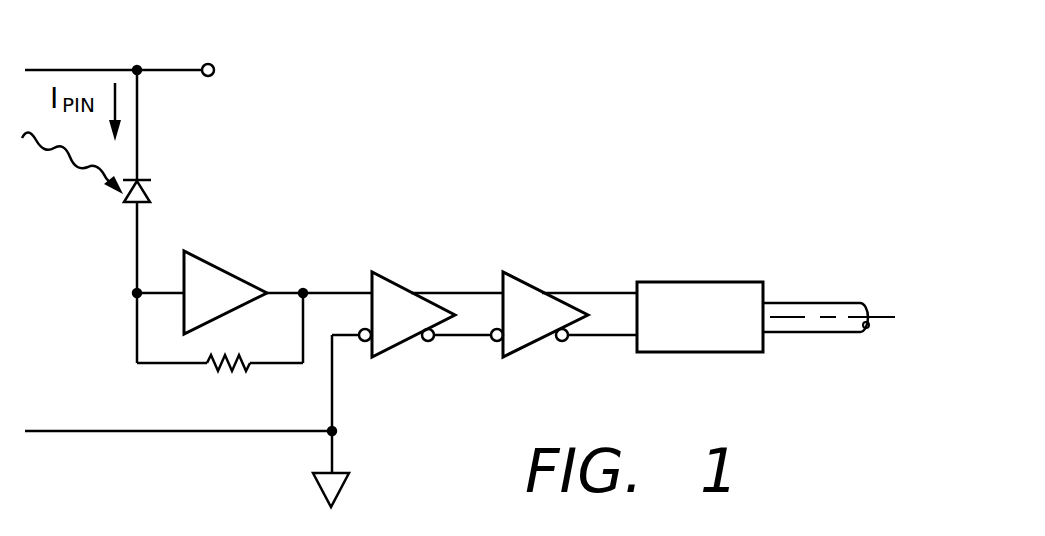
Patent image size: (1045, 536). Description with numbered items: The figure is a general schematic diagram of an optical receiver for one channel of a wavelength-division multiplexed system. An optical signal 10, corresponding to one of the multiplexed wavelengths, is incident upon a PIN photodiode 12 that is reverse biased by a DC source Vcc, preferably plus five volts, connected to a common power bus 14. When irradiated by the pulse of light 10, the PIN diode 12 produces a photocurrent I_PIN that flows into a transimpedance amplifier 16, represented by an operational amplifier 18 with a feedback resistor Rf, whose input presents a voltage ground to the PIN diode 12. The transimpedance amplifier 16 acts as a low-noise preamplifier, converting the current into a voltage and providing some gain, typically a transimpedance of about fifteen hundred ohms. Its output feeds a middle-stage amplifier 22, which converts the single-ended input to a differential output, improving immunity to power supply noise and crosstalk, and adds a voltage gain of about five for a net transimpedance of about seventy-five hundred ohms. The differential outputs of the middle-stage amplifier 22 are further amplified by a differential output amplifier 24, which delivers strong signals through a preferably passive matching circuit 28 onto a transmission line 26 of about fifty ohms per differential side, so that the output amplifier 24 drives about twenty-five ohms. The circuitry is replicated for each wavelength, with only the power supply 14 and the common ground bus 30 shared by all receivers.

The optical signal 10 is at (60, 166).
The PIN photodiode 12 is at (150, 197).
The common power bus 14 is at (162, 68).
The transimpedance amplifier 16 is at (282, 232).
The operational amplifier 18 is at (225, 283).
The middle-stage amplifier 22 is at (383, 295).
The differential output amplifier 24 is at (517, 295).
The transmission line 26 is at (810, 310).
The matching circuit 28 is at (683, 295).
The common ground bus 30 is at (212, 434).